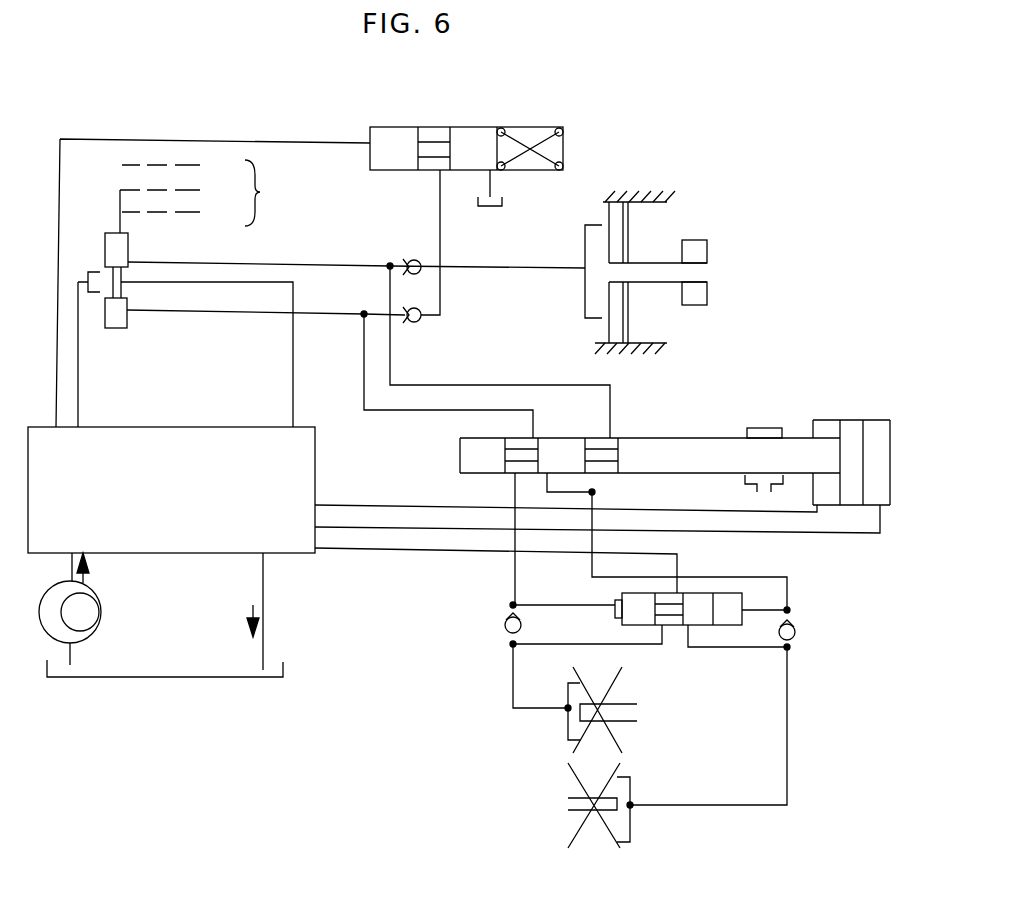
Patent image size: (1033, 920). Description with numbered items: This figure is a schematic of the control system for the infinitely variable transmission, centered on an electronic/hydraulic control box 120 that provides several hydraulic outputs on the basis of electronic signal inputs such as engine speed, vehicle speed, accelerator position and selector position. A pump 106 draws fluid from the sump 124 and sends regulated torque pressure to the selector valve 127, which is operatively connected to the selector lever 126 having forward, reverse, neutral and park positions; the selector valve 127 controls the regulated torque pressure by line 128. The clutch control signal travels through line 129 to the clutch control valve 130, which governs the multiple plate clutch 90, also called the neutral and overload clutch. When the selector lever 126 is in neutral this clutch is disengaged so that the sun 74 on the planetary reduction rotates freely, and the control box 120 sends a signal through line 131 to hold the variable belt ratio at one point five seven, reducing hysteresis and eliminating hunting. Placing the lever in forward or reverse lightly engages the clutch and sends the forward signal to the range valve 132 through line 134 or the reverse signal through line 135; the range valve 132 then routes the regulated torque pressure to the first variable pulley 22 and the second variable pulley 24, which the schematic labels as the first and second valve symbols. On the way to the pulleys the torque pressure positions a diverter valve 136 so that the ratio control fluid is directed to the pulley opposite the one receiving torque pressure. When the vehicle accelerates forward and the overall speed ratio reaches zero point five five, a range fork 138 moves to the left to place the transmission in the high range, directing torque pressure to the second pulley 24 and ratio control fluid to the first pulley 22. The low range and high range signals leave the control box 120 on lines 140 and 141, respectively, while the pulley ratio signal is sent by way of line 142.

The first variable pulley 22 is at (668, 712).
The second variable pulley 24 is at (594, 842).
The sun 74 is at (703, 298).
The multiple plate clutch 90 is at (646, 178).
The pump 106 is at (99, 605).
The electronic/hydraulic control box 120 is at (315, 476).
The sump 124 is at (490, 207).
The selector lever 126 is at (218, 193).
The selector valve 127 is at (113, 328).
The line 128 is at (78, 408).
The line 129 is at (112, 138).
The clutch control valve 130 is at (518, 127).
The line 131 is at (293, 368).
The range valve 132 is at (462, 472).
The line 134 is at (392, 412).
The line 135 is at (450, 386).
The diverter valve 136 is at (705, 593).
The range fork 138 is at (755, 427).
The line 140 is at (648, 512).
The line 141 is at (672, 533).
The line 142 is at (392, 549).